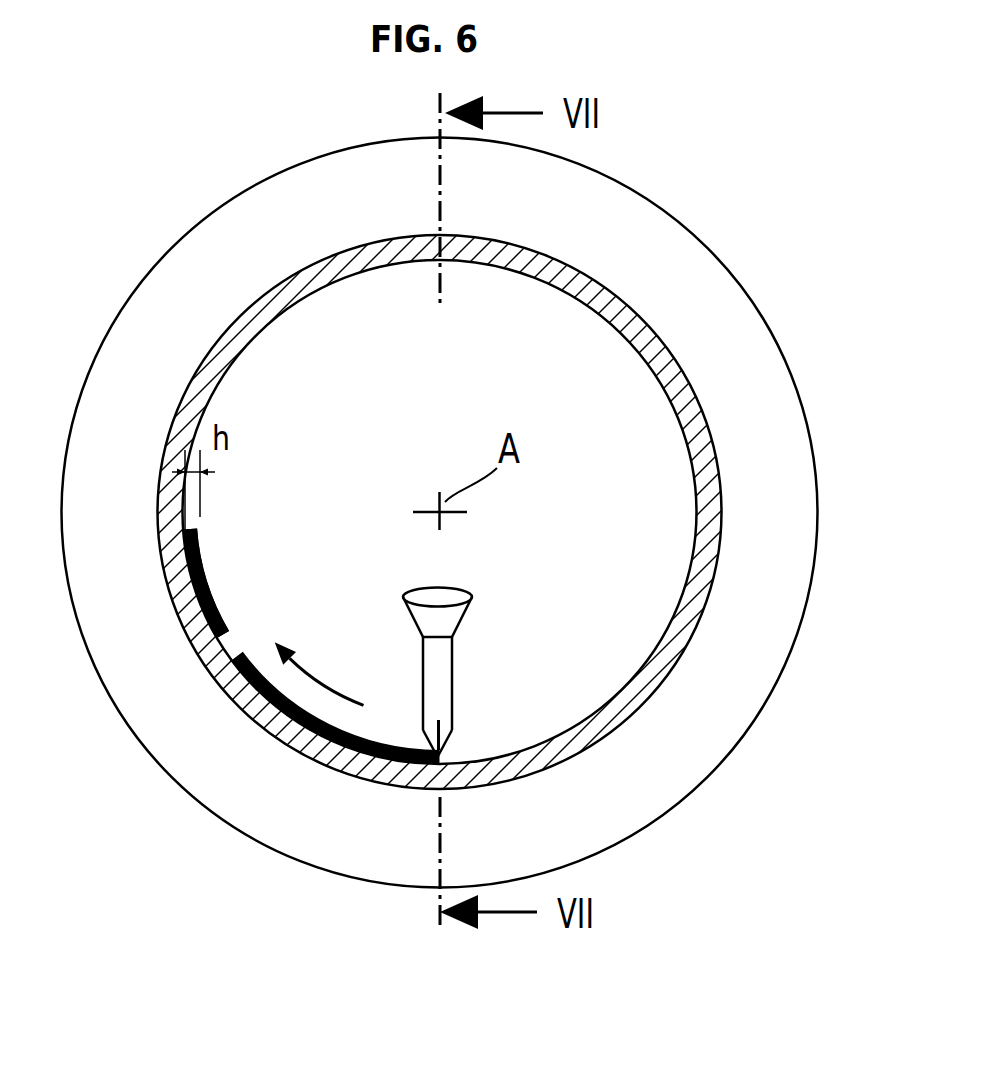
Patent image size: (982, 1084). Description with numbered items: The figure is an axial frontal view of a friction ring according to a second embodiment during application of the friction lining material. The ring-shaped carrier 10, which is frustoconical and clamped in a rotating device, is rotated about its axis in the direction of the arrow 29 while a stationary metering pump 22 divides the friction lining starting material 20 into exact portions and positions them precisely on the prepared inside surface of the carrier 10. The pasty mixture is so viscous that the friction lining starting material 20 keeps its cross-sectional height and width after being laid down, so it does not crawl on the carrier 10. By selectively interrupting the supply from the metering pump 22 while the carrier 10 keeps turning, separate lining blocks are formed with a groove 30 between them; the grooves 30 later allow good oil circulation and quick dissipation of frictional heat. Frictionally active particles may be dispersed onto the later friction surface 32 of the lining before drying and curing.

The carrier 10 is at (663, 252).
The friction lining starting material 20 is at (307, 758).
The metering pump 22 is at (443, 682).
The arrow 29 is at (332, 687).
The groove 30 is at (235, 643).
The friction surface 32 is at (214, 569).